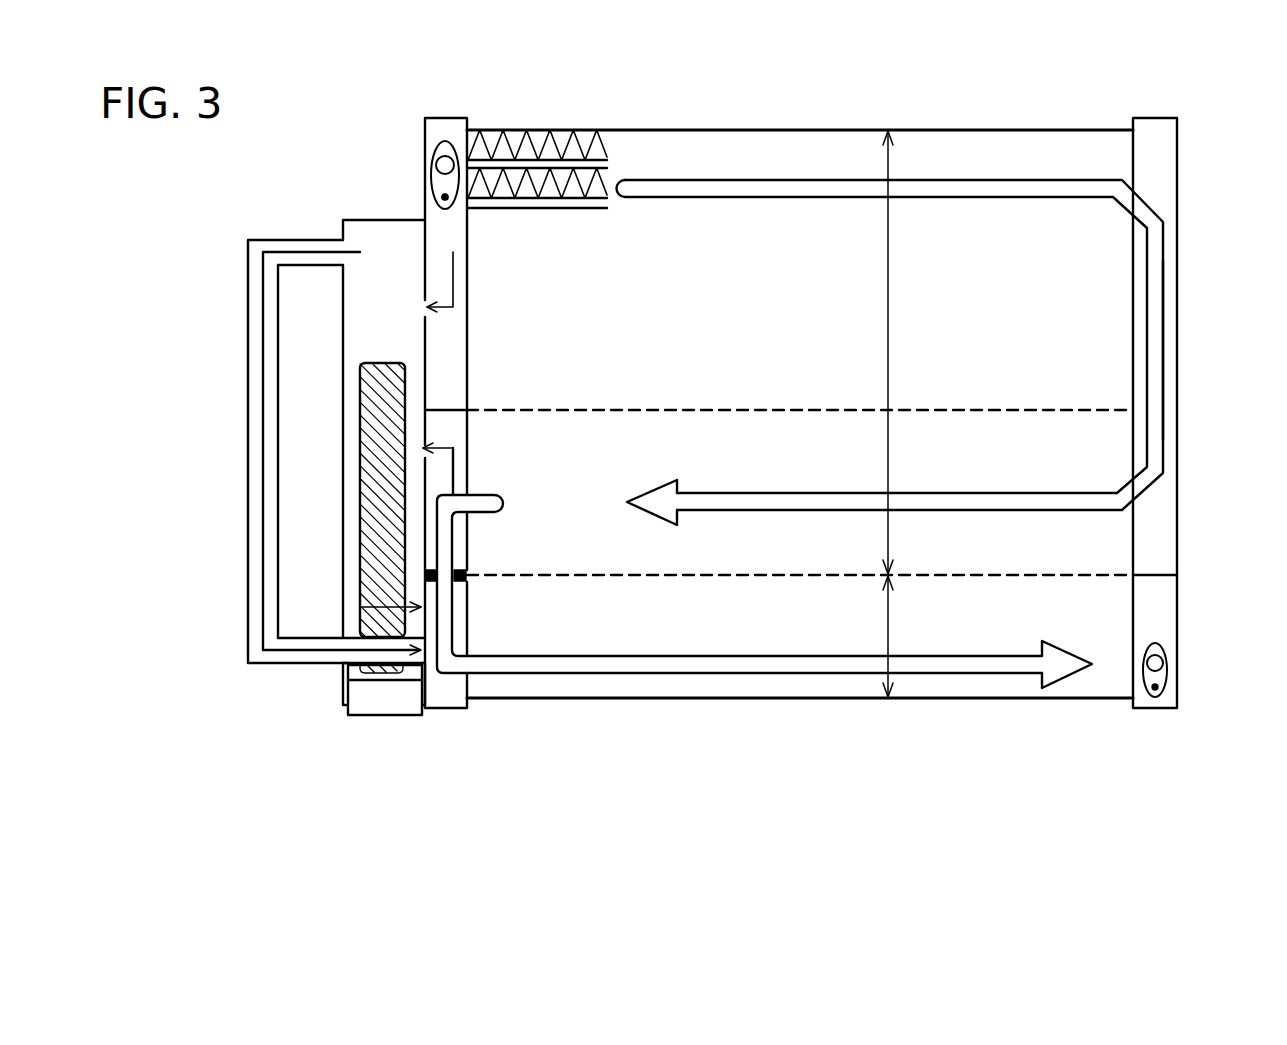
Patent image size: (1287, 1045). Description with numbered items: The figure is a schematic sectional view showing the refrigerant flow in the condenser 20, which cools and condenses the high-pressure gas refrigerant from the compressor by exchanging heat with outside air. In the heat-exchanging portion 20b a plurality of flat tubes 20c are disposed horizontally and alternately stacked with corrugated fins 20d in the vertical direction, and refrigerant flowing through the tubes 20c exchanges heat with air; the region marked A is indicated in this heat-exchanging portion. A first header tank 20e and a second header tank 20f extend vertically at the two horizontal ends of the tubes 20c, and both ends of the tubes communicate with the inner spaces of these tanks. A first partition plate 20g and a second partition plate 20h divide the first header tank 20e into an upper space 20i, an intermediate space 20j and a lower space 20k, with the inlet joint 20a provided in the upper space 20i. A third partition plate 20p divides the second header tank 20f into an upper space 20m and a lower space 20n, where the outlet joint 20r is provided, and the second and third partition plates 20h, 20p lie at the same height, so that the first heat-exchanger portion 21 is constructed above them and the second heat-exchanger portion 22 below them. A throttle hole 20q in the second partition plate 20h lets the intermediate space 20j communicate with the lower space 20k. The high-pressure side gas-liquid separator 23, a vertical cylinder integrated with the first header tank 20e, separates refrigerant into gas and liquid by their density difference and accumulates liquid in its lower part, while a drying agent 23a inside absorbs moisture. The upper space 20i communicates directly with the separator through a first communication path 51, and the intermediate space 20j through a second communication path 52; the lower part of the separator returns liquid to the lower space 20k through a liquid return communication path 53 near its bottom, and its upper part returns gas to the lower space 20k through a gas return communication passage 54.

The condenser 20 is at (820, 127).
The inlet joint 20a is at (440, 165).
The heat-exchanging portion 20b is at (722, 298).
The flat tubes 20c is at (585, 168).
The corrugated fins 20d is at (487, 132).
The first header tank 20e is at (423, 185).
The second header tank 20f is at (1177, 197).
The first partition plate 20g is at (452, 407).
The second partition plate 20h is at (458, 590).
The upper space 20i is at (438, 237).
The intermediate space 20j is at (452, 432).
The lower space 20k is at (450, 702).
The upper space 20m is at (1152, 170).
The lower space 20n is at (1160, 625).
The third partition plate 20p is at (1153, 578).
The throttle hole 20q is at (447, 585).
The outlet joint 20r is at (1163, 663).
The first heat-exchanger portion 21 is at (888, 348).
The second heat-exchanger portion 22 is at (888, 633).
The high-pressure side gas-liquid separator 23 is at (356, 331).
The drying agent 23a is at (358, 393).
The first communication path 51 is at (423, 300).
The second communication path 52 is at (420, 440).
The liquid return communication path 53 is at (420, 598).
The gas return communication passage 54 is at (257, 527).
The flow region A is at (975, 188).